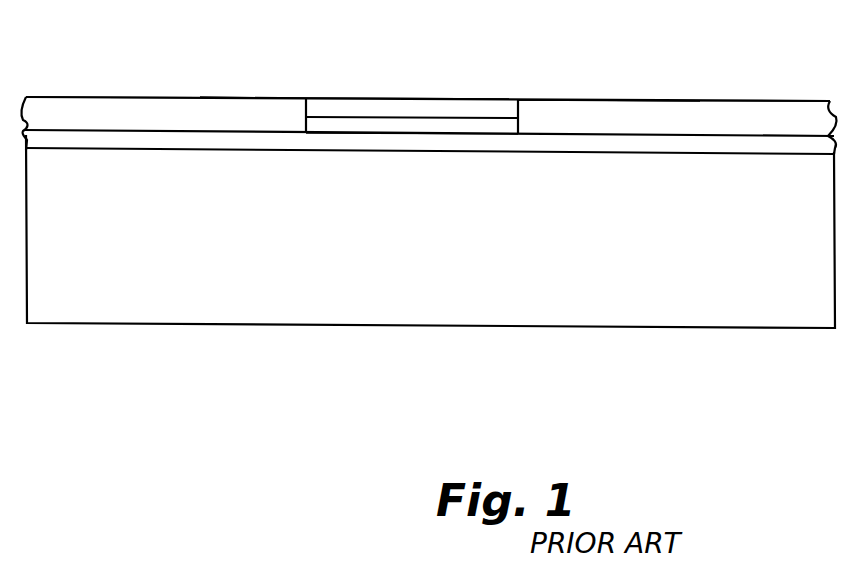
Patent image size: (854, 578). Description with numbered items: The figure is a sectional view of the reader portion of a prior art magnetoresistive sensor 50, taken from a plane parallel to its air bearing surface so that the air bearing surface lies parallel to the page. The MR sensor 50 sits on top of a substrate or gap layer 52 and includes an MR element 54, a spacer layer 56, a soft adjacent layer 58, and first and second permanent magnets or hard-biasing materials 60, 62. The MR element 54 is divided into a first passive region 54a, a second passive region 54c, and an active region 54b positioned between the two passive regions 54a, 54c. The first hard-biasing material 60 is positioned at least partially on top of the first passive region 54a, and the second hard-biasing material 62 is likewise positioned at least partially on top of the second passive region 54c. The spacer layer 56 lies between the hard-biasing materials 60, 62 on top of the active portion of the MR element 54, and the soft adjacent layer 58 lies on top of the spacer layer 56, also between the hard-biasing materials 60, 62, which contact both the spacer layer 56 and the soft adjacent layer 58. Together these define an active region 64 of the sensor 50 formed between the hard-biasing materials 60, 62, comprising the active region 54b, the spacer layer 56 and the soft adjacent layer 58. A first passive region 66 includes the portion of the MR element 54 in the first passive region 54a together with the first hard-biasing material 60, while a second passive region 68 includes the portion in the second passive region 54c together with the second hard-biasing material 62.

The magnetoresistive sensor 50 is at (90, 84).
The substrate or gap layer 52 is at (195, 293).
The MR element 54 is at (25, 137).
The first passive region 54a is at (150, 141).
The active region 54b is at (455, 146).
The second passive region 54c is at (782, 152).
The spacer layer 56 is at (337, 123).
The soft adjacent layer 58 is at (383, 106).
The first hard-biasing material 60 is at (275, 113).
The second hard-biasing material 62 is at (628, 114).
The active region 64 is at (438, 86).
The first passive region 66 is at (217, 88).
The second passive region 68 is at (718, 98).